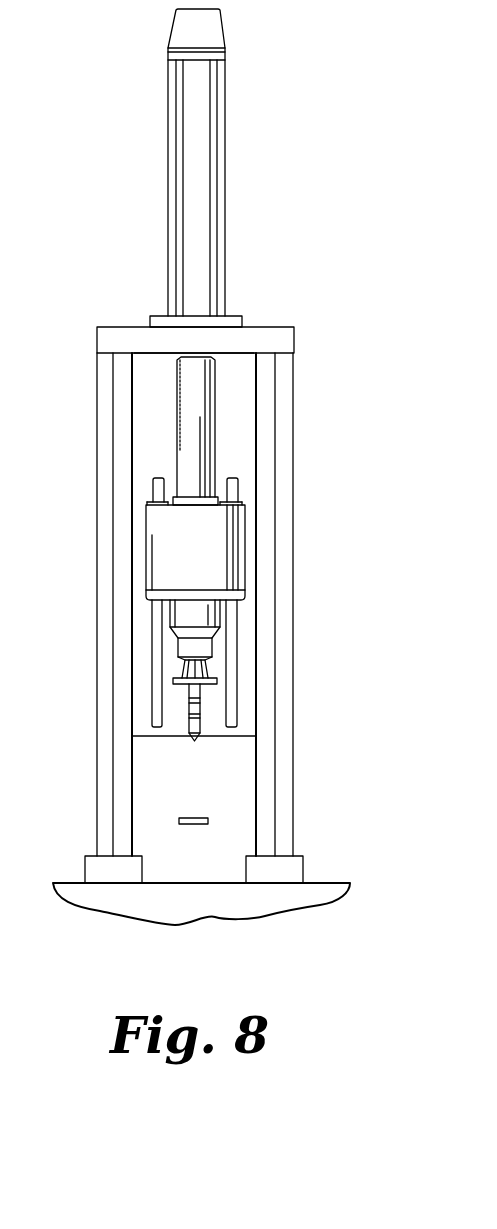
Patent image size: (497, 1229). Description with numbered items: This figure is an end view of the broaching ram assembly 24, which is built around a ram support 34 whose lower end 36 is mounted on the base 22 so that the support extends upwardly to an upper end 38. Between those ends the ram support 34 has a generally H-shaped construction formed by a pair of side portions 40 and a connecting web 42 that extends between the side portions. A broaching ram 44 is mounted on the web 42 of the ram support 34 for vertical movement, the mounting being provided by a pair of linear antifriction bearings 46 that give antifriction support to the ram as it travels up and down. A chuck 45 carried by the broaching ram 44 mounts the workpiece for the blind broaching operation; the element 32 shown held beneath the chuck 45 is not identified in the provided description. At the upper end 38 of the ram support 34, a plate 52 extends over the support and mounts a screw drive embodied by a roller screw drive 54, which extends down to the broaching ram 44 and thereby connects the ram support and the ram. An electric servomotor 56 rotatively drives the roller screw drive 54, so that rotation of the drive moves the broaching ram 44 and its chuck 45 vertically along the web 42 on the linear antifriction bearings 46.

The base 22 is at (313, 902).
The broaching ram assembly 24 is at (310, 552).
The tool 32 is at (175, 681).
The ram support 34 is at (298, 466).
The lower end 36 is at (303, 858).
The upper end 38 is at (297, 341).
The side portions 40 is at (97, 462).
The connecting web 42 is at (243, 406).
The broaching ram 44 is at (153, 552).
The chuck 45 is at (202, 647).
The linear antifriction bearings 46 is at (143, 650).
The plate 52 is at (262, 340).
The roller screw drive 54 is at (183, 383).
The electric servomotor 56 is at (212, 28).